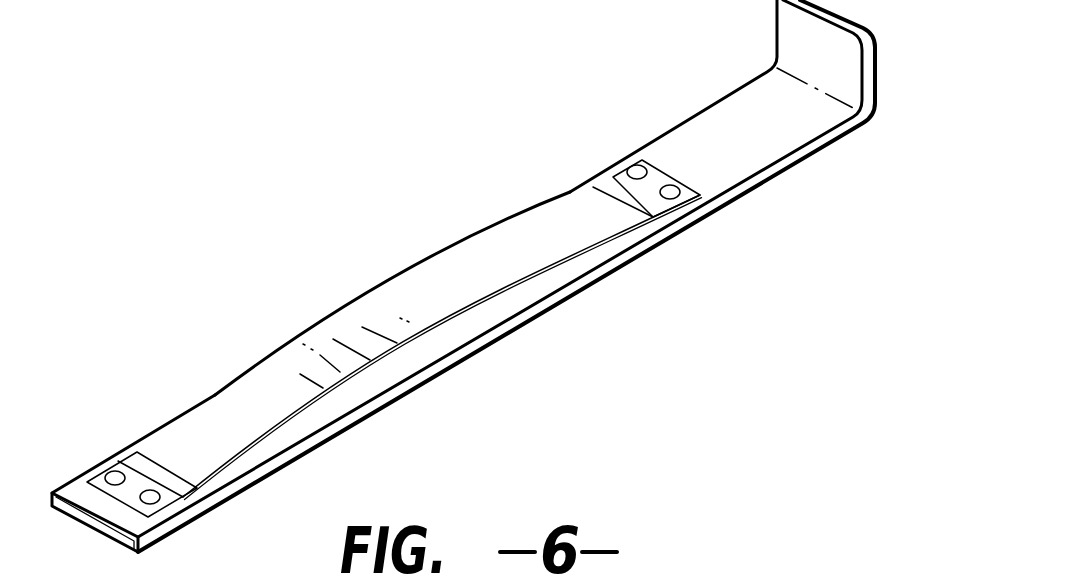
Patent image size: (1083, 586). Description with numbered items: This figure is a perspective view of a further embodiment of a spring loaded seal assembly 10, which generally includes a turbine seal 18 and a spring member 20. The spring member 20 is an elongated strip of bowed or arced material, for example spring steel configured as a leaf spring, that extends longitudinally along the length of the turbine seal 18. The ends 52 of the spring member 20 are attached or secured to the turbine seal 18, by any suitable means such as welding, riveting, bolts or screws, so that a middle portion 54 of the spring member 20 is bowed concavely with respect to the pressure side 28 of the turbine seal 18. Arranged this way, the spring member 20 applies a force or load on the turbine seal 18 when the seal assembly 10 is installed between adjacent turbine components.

The spring loaded seal assembly 10 is at (463, 284).
The turbine seal 18 is at (700, 107).
The spring member 20 is at (220, 383).
The pressure side 28 is at (735, 160).
The ends 52 is at (150, 506).
The middle portion 54 is at (397, 333).